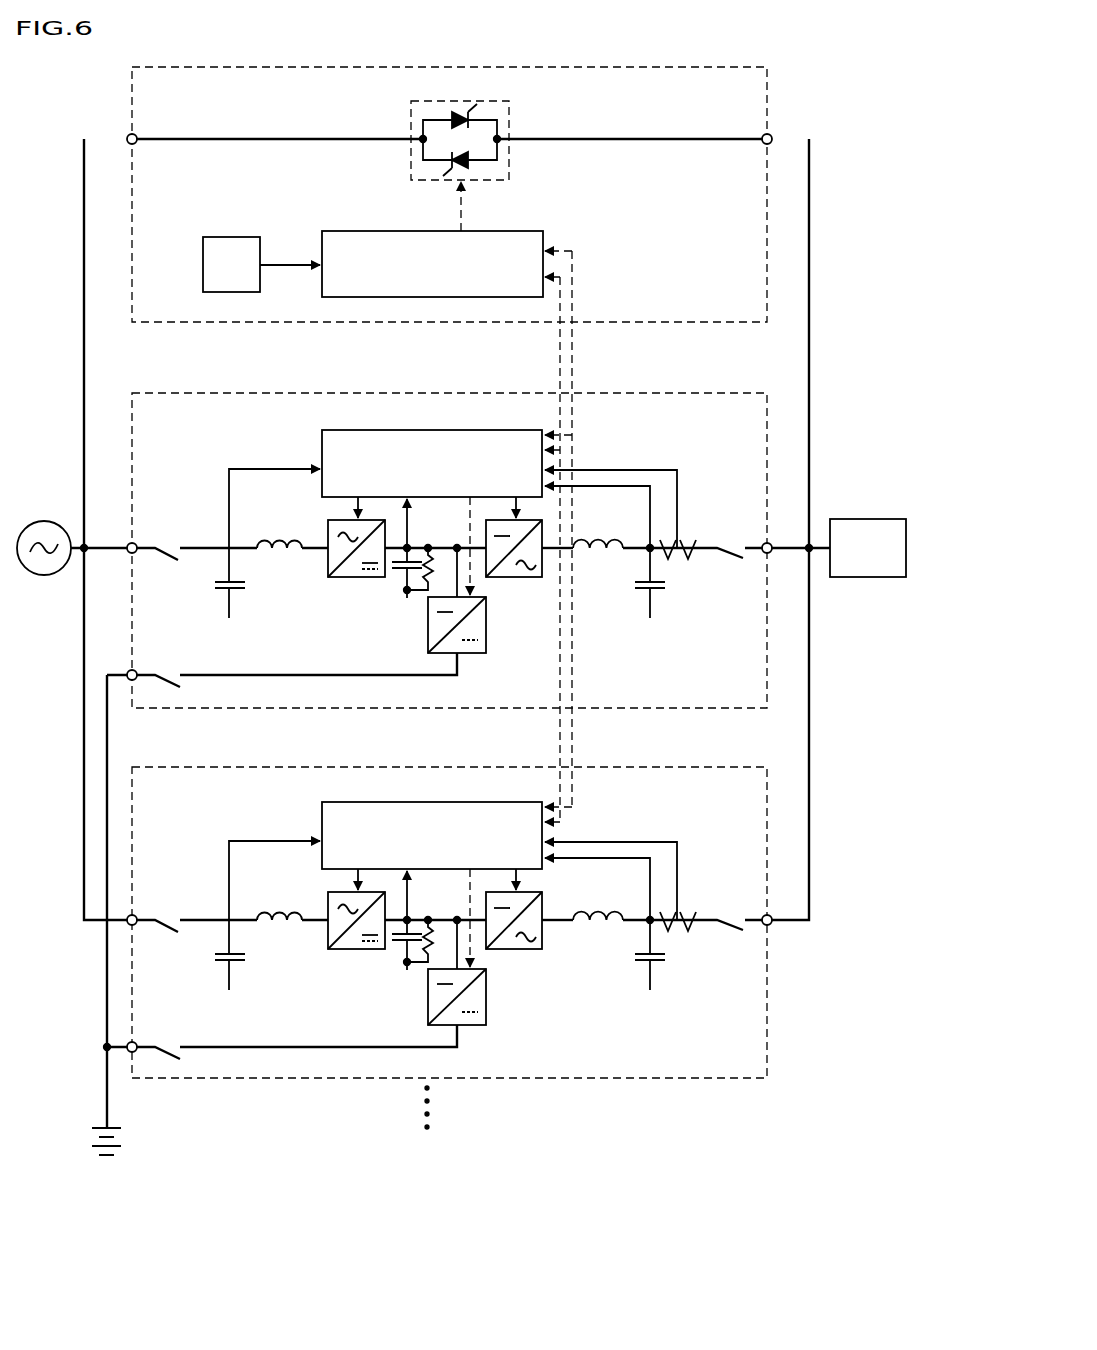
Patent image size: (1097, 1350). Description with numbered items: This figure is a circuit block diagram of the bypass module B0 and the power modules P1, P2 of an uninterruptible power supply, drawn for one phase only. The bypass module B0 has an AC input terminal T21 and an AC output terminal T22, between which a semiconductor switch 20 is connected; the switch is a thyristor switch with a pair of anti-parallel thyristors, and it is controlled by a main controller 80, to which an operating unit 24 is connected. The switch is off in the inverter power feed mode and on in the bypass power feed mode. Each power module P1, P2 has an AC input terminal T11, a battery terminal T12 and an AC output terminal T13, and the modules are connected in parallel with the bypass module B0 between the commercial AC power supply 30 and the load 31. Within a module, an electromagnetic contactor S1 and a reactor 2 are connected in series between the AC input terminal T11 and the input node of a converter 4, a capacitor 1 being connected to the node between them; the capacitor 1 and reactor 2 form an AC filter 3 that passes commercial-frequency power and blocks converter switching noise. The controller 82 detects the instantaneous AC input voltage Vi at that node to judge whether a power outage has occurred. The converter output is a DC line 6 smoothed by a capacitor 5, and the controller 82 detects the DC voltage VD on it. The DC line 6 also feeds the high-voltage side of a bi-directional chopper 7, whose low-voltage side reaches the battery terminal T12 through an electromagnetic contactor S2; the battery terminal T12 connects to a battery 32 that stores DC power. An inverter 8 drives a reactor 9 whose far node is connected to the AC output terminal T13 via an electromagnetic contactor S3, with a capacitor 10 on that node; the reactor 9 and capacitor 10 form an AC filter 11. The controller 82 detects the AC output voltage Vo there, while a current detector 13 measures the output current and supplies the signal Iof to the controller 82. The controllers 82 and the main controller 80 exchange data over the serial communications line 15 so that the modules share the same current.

The capacitor 1 is at (240, 578).
The reactor 2 is at (284, 556).
The AC filter 3 is at (300, 622).
The converter 4 is at (344, 578).
The capacitor 5 is at (398, 571).
The DC line 6 is at (437, 557).
The bi-directional chopper 7 is at (428, 633).
The inverter 8 is at (510, 580).
The reactor 9 is at (598, 560).
The capacitor 10 is at (644, 592).
The AC filter 11 is at (623, 622).
The current detector 13 is at (684, 562).
The communications line 15 is at (560, 360).
The semiconductor switch 20 is at (490, 101).
The operating unit 24 is at (215, 237).
The commercial AC power supply 30 is at (43, 521).
The load 31 is at (866, 519).
The battery 32 is at (118, 1128).
The main controller 80 is at (522, 231).
The controller 82 is at (493, 430).
The bypass module B0 is at (712, 67).
The power module P1 is at (712, 393).
The power module P2 is at (712, 767).
The AC input terminal T11 is at (135, 544).
The battery terminal T12 is at (135, 671).
The AC output terminal T13 is at (769, 543).
The AC input terminal T21 is at (130, 146).
The AC output terminal T22 is at (772, 136).
The electromagnetic contactor S1 is at (172, 564).
The electromagnetic contactor S2 is at (170, 682).
The electromagnetic contactor S3 is at (740, 562).
The AC input voltage Vi is at (280, 471).
The DC voltage VD is at (430, 528).
The AC output voltage Vo is at (628, 489).
The signal Iof is at (637, 470).